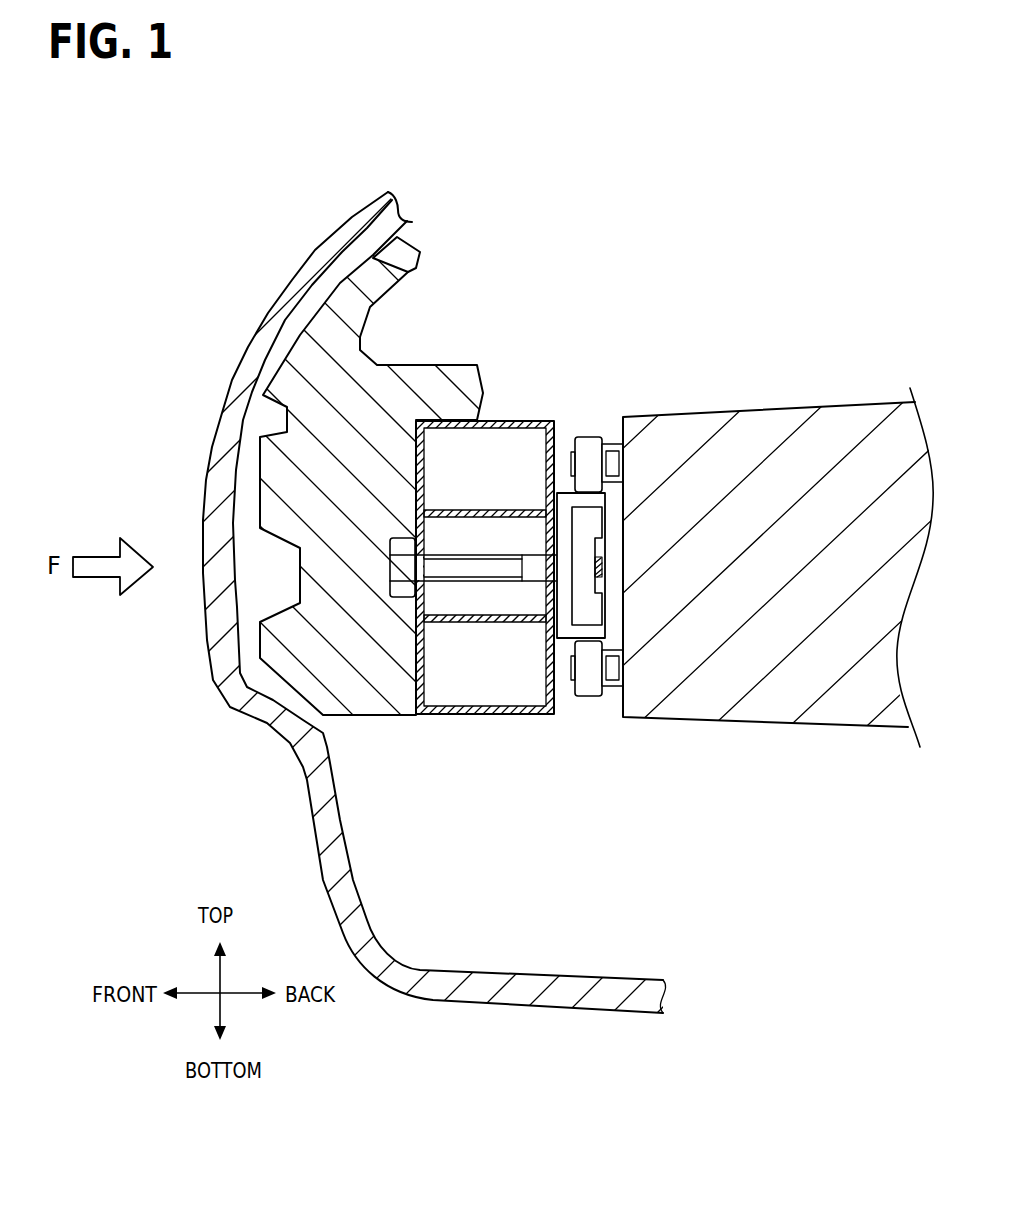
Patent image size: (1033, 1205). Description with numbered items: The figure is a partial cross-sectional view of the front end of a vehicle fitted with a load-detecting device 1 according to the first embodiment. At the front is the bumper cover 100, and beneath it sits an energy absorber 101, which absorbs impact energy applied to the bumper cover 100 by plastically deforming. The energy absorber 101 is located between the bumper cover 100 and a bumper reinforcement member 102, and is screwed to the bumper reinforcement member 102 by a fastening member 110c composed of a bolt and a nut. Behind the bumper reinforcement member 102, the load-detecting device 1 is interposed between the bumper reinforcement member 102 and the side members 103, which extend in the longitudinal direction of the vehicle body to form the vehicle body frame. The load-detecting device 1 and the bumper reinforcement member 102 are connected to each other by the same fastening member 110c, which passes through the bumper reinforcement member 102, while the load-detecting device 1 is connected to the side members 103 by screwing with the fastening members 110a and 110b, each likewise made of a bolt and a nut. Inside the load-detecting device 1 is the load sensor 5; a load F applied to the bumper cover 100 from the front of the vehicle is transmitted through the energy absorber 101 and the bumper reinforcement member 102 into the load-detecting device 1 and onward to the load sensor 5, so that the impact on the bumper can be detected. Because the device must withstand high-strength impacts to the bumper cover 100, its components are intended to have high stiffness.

The load-detecting device 1 is at (561, 439).
The load sensor 5 is at (602, 567).
The bumper cover 100 is at (292, 290).
The energy absorber 101 is at (417, 268).
The bumper reinforcement member 102 is at (513, 717).
The side members 103 is at (840, 720).
The fastening member 110a is at (587, 440).
The fastening member 110b is at (590, 678).
The fastening member 110c is at (463, 565).